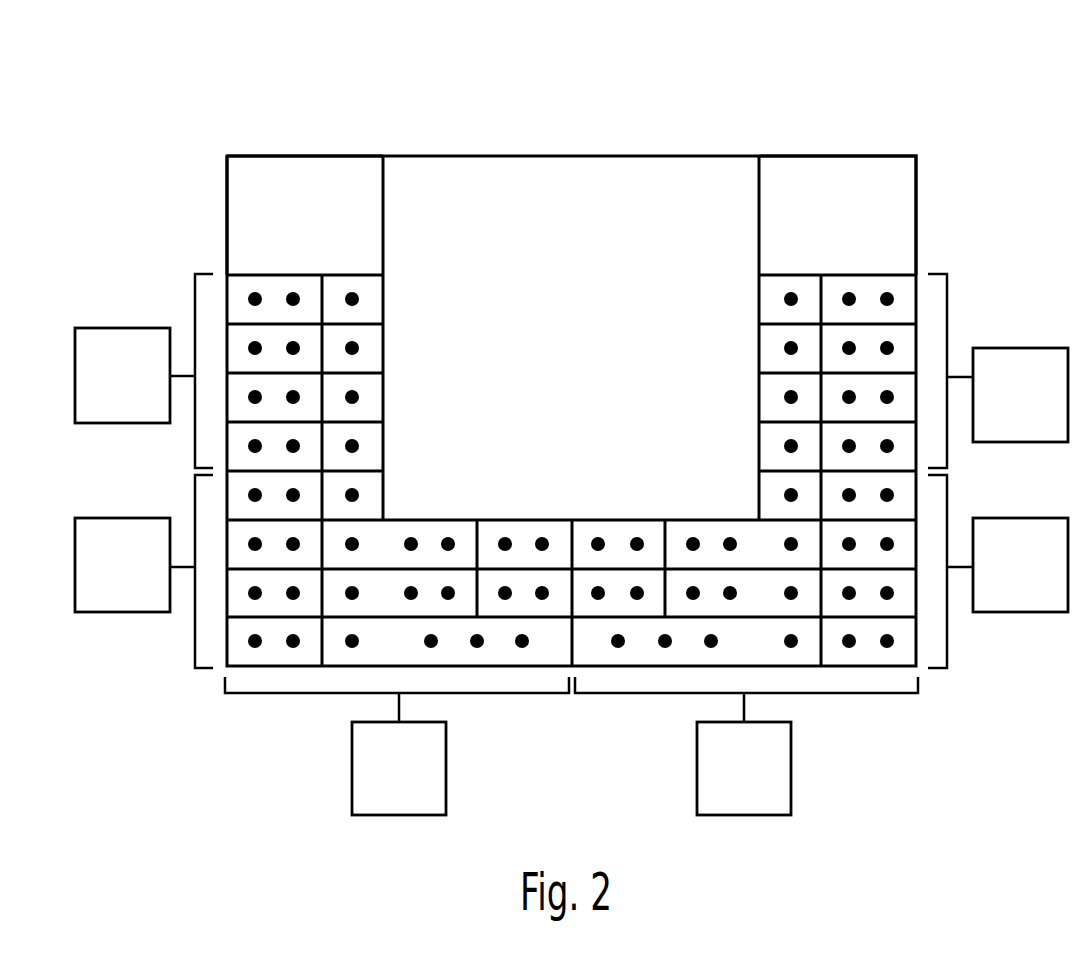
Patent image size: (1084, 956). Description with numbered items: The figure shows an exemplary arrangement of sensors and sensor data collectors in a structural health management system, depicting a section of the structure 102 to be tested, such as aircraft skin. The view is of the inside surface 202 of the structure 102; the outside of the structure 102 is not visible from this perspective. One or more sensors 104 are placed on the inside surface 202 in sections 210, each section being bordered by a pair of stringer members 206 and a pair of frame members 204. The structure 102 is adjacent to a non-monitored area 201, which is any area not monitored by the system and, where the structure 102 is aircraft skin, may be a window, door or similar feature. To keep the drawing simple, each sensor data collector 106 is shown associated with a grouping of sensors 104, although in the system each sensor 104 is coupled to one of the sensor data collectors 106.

The structure 102 is at (620, 74).
The sensor 104 is at (293, 648).
The sensor data collector 106 is at (571, 544).
The non-monitored area 201 is at (677, 178).
The inside surface 202 is at (893, 192).
The frame member 204 is at (323, 295).
The stringer member 206 is at (250, 325).
The section 210 is at (272, 287).